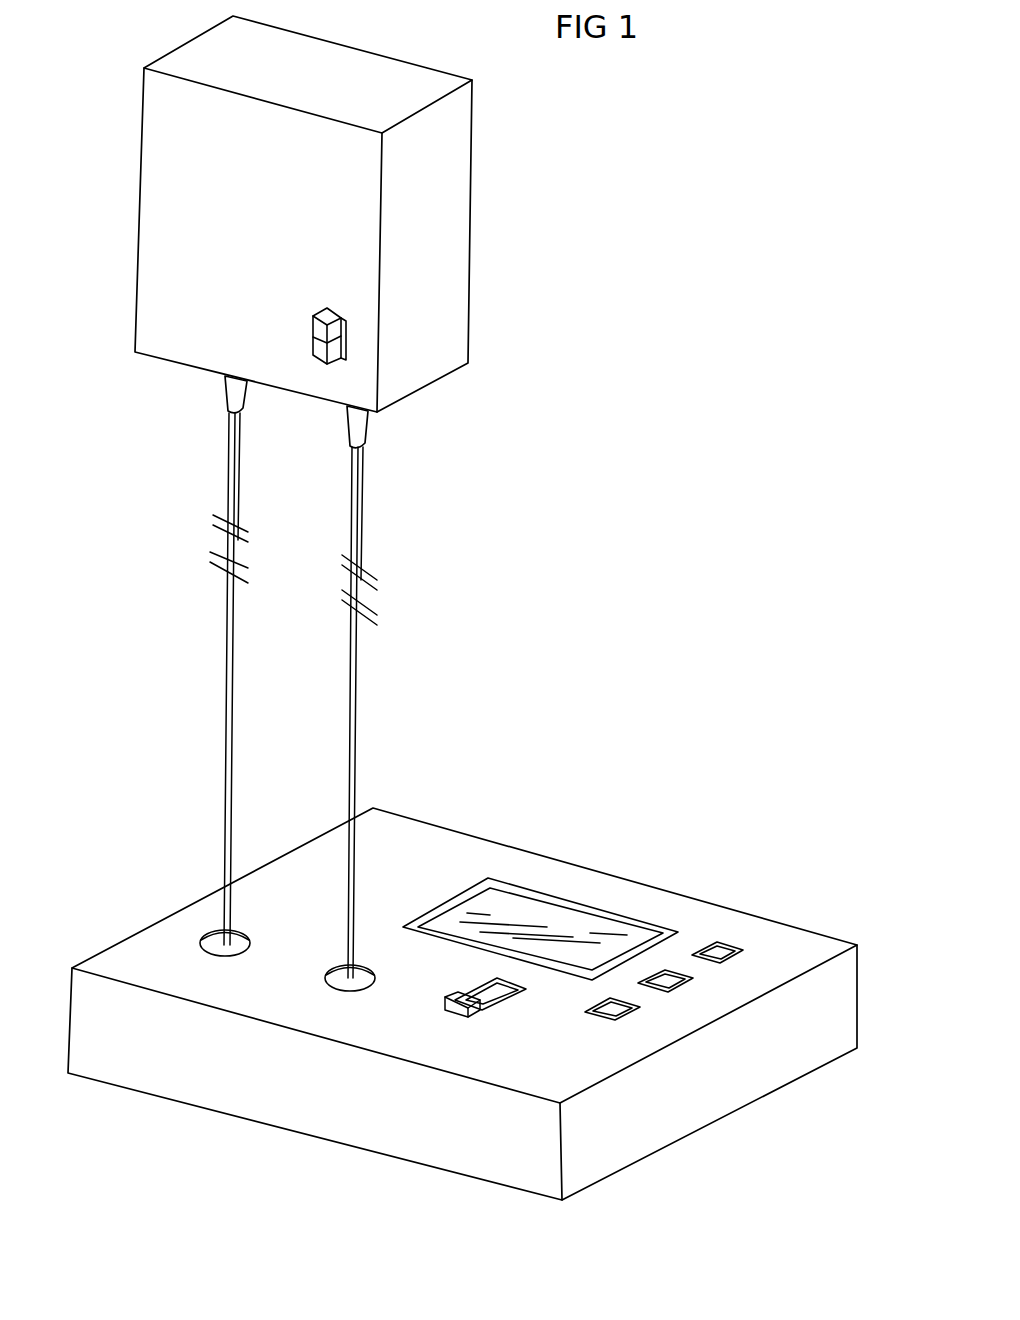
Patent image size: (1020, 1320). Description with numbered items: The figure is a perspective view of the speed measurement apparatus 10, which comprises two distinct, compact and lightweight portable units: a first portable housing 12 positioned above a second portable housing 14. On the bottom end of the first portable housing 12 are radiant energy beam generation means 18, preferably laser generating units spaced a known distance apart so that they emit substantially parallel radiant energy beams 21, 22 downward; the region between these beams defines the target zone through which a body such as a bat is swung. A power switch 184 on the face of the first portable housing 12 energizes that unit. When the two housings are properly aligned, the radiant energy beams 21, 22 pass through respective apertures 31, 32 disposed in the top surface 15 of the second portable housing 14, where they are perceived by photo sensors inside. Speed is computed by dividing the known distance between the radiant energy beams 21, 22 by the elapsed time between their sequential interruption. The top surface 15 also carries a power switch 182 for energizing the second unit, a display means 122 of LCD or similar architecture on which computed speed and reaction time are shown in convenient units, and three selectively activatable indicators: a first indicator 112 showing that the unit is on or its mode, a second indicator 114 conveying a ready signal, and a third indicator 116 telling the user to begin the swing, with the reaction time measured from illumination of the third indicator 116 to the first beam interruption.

The speed measurement apparatus 10 is at (557, 333).
The first portable housing 12 is at (472, 222).
The power switch 184 is at (330, 310).
The radiant energy beam generation means 18 is at (228, 387).
The radiant energy beam 22 is at (225, 675).
The radiant energy beam 21 is at (357, 700).
The second portable housing 14 is at (452, 830).
The top surface 15 is at (147, 945).
The aperture 32 is at (240, 930).
The aperture 31 is at (358, 978).
The display means 122 is at (532, 918).
The power switch 182 is at (447, 1013).
The third indicator 116 is at (605, 1020).
The second indicator 114 is at (668, 995).
The first indicator 112 is at (723, 966).